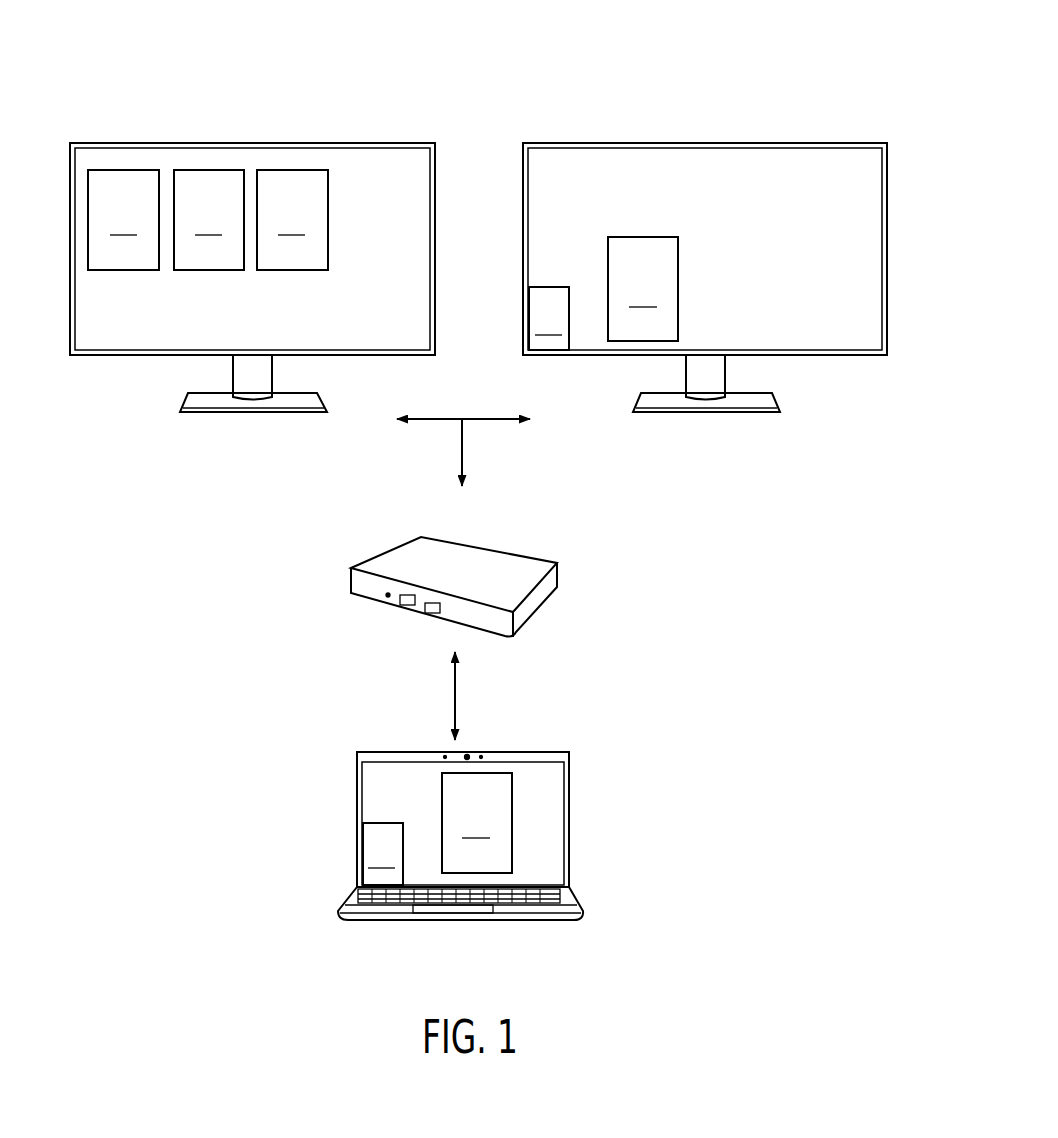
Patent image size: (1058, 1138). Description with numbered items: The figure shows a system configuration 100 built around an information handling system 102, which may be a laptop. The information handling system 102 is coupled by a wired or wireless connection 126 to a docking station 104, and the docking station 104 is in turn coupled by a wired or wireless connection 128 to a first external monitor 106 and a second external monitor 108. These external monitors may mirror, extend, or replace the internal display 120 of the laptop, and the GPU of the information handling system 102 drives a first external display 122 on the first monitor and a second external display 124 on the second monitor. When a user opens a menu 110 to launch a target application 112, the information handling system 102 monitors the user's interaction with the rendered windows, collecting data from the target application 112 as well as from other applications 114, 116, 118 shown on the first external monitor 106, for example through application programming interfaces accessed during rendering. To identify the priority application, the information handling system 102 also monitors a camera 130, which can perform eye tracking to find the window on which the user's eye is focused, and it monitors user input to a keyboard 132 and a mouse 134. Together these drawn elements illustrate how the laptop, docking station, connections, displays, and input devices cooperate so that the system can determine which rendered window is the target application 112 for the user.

The system configuration 100 is at (108, 98).
The information handling system 102 is at (502, 818).
The docking station 104 is at (578, 552).
The first external monitor 106 is at (296, 275).
The second external monitor 108 is at (742, 275).
The menu 110 is at (466, 586).
The target application 112 is at (560, 555).
The application 114 is at (123, 220).
The application 116 is at (209, 220).
The application 118 is at (292, 220).
The internal display 120 is at (538, 806).
The first external display 122 is at (408, 168).
The second external display 124 is at (852, 170).
The wired or wireless connection 126 is at (422, 698).
The wired or wireless connection 128 is at (438, 444).
The camera 130 is at (484, 748).
The keyboard 132 is at (357, 893).
The mouse 134 is at (489, 907).